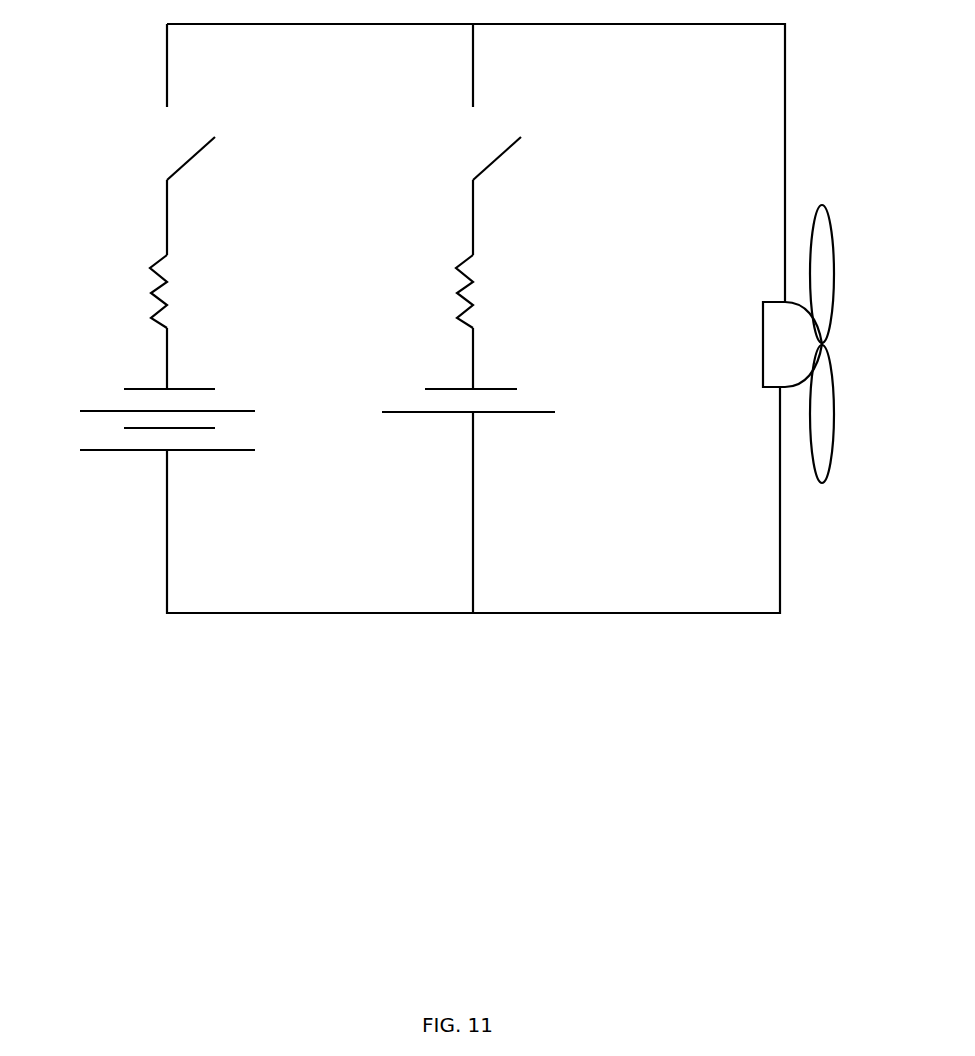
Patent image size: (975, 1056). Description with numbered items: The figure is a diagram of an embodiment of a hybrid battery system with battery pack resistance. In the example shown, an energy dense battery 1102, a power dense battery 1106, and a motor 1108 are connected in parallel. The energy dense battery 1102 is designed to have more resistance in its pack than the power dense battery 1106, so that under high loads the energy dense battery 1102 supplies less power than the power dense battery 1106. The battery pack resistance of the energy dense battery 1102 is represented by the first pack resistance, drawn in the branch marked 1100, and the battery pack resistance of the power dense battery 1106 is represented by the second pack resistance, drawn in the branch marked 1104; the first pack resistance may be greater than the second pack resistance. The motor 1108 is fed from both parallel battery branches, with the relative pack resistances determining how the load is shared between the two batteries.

The first resistor Rp1 1100 is at (150, 268).
The energy dense battery 1102 is at (96, 411).
The second resistor Rp2 1104 is at (456, 268).
The power dense battery 1106 is at (392, 412).
The motor 1108 is at (763, 317).